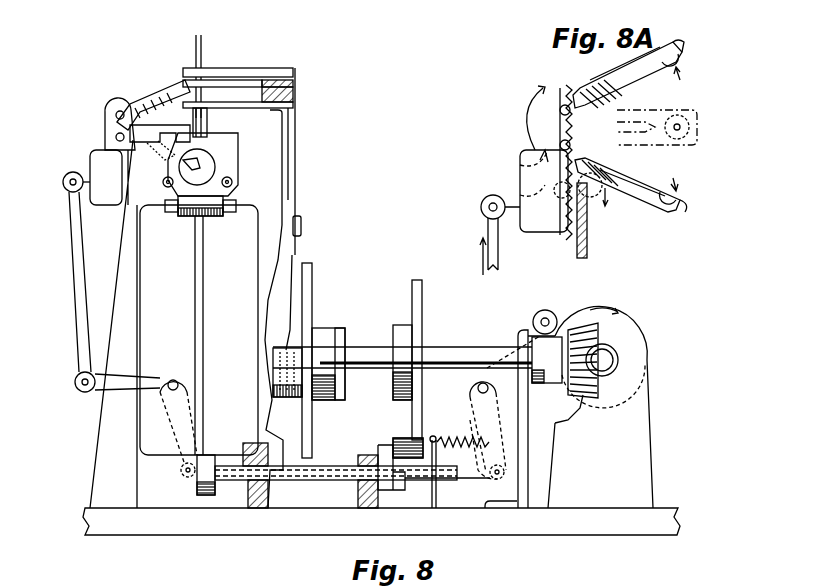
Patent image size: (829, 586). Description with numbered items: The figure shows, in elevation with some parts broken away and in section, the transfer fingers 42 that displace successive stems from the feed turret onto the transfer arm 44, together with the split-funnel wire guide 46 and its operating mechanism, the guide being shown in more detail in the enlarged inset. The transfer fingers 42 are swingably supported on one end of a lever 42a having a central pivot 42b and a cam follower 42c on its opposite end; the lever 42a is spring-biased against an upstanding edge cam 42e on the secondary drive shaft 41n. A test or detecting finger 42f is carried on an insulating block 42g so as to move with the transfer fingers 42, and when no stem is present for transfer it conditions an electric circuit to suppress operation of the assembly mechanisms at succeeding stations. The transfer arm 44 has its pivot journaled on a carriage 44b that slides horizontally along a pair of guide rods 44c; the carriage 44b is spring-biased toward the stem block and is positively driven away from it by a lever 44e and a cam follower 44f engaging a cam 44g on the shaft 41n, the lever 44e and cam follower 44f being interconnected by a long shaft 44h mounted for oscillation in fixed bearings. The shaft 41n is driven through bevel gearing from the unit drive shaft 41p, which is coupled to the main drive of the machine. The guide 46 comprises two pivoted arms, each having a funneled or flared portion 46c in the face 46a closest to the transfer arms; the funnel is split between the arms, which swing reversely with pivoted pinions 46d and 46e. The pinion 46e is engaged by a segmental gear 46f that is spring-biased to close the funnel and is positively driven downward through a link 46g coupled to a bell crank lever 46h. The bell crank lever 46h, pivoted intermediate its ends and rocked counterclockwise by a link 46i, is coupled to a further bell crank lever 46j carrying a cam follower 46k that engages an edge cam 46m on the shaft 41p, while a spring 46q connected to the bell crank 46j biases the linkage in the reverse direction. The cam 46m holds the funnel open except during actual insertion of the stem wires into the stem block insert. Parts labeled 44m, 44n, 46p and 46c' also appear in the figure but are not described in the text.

In FIG. 8, the transfer fingers 42 is at (219, 68).
In FIG. 8, the test or detecting finger 42f is at (253, 84).
In FIG. 8, the insulating block 42g is at (296, 95).
In FIG. 8, the lever 42a is at (296, 158).
In FIG. 8, the central pivot 42b is at (302, 235).
In FIG. 8, the cam follower 42c is at (268, 396).
In FIG. 8, the upstanding edge cam 42e is at (305, 282).
In FIG. 8, the transfer arm 44 is at (207, 122).
In FIG. 8, the carriage 44b is at (243, 143).
In FIG. 8, the guide rods 44c is at (166, 200).
In FIG. 8, the lever 44e is at (204, 287).
In FIG. 8, the cam follower 44f is at (402, 440).
In FIG. 8, the cam 44g is at (412, 272).
In FIG. 8, the long shaft 44h is at (232, 497).
In FIG. 8, the bracket 44m is at (160, 140).
In FIG. 8, the stepped plate 44n is at (180, 128).
In FIG. 8, the secondary drive shaft 41n is at (478, 347).
In FIG. 8, the unit drive shaft 41p is at (604, 372).
In FIG. 8, the split-funnel wire guide 46 is at (172, 84).
In FIG. 8A, the split-funnel wire guide 46 is at (684, 52).
In FIG. 8A, the face 46a is at (643, 75).
In FIG. 8A, the funneled or flared portion 46c is at (689, 129).
In FIG. 8A, the arm edge 46c' is at (629, 121).
In FIG. 8A, the pivoted pinion 46d is at (570, 90).
In FIG. 8A, the pivoted pinion 46e is at (584, 181).
In FIG. 8A, the segmental gear 46f is at (518, 165).
In FIG. 8, the link 46g is at (76, 233).
In FIG. 8A, the link 46g is at (500, 262).
In FIG. 8, the bell crank lever 46h is at (150, 378).
In FIG. 8, the link 46i is at (422, 455).
In FIG. 8, the bell crank lever 46j is at (528, 327).
In FIG. 8, the cam follower 46k is at (553, 307).
In FIG. 8, the edge cam 46m is at (642, 335).
In FIG. 8, the pivot 46p is at (92, 162).
In FIG. 8, the spring 46q is at (446, 437).